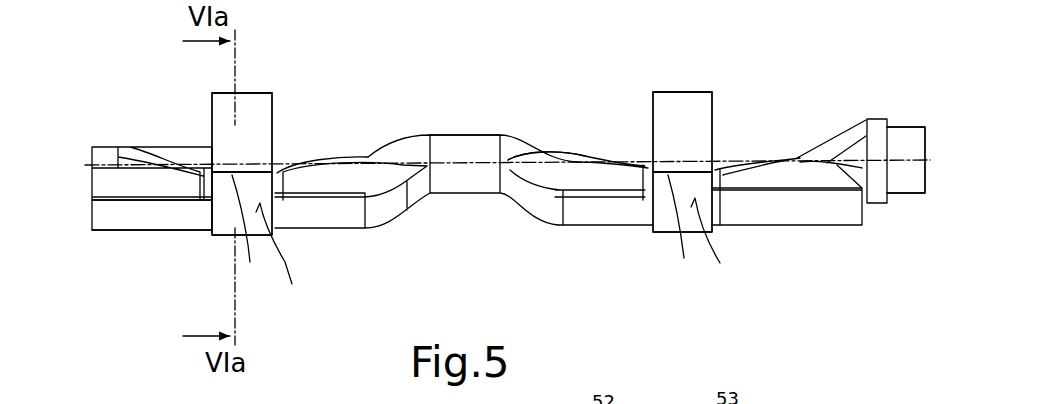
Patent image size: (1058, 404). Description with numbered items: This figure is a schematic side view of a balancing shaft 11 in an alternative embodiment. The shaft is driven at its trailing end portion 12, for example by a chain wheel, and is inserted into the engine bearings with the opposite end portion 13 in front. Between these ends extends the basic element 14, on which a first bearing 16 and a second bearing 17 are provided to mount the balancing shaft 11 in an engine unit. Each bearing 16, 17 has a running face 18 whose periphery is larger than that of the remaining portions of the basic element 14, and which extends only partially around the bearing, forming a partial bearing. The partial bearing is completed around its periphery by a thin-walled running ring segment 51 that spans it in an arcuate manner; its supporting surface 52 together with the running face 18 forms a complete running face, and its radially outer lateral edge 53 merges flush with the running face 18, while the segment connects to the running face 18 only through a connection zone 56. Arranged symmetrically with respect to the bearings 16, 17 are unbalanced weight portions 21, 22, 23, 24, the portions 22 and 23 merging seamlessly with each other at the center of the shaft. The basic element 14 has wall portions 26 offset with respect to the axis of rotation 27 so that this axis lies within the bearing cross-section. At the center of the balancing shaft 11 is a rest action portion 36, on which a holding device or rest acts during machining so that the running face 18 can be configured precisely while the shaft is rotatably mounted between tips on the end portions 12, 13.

The balancing shaft 11 is at (766, 80).
The trailing end portion 12 is at (912, 118).
The end portion 13 is at (94, 244).
The basic element 14 is at (503, 230).
The first bearing 16 is at (222, 244).
The second bearing 17 is at (665, 248).
The running face 18 is at (496, 255).
The unbalanced weight portion 21 is at (172, 244).
The unbalanced weight portion 22 is at (325, 244).
The unbalanced weight portion 23 is at (592, 246).
The unbalanced weight portion 24 is at (812, 241).
The wall portion 26 is at (592, 152).
The axis of rotation 27 is at (905, 163).
The rest action portion 36 is at (461, 118).
The running ring segment 51 is at (291, 109).
The supporting surface 52 is at (247, 96).
The radially outer lateral edge 53 is at (212, 94).
The connection zone 56 is at (465, 231).